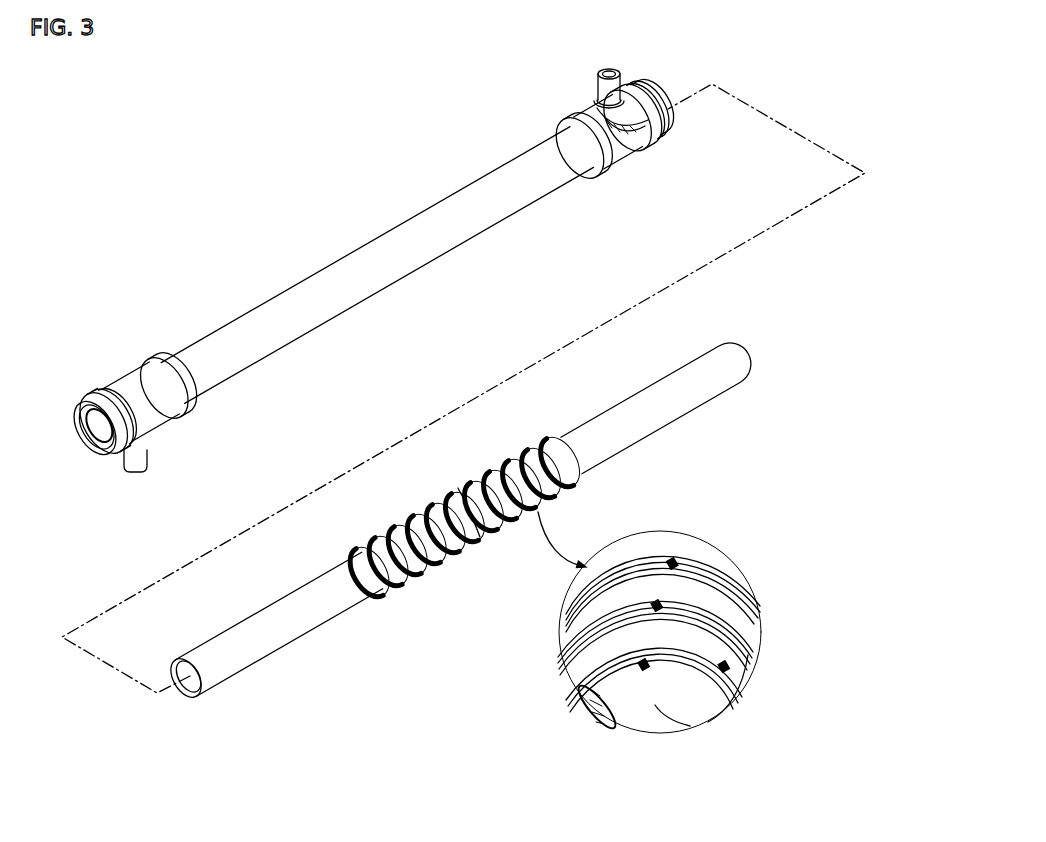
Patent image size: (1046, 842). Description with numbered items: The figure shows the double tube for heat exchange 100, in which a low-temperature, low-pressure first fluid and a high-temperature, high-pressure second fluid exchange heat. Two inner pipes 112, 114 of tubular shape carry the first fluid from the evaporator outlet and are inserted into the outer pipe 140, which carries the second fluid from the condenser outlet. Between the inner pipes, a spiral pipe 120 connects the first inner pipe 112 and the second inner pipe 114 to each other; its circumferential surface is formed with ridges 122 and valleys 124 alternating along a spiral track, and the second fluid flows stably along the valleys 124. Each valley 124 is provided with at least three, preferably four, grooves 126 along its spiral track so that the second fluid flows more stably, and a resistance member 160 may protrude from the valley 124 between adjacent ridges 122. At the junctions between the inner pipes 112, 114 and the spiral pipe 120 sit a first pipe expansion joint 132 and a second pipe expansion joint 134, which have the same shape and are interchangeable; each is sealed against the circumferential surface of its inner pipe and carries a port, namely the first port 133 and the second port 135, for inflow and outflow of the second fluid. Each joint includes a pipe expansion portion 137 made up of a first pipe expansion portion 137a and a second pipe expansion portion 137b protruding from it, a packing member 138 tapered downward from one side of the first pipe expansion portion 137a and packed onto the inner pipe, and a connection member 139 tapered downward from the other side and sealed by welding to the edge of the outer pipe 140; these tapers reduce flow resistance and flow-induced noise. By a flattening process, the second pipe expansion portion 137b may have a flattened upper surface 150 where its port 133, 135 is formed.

The double tube for heat exchange 100 is at (199, 170).
The first inner pipe 112 is at (297, 632).
The second inner pipe 114 is at (662, 428).
The spiral pipe 120 is at (528, 450).
The ridges 122 is at (405, 527).
The valleys 124 is at (663, 720).
The grooves 126 is at (663, 708).
The first pipe expansion joint 132 is at (381, 264).
The first port 133 is at (130, 467).
The second pipe expansion joint 134 is at (629, 122).
The second port 135 is at (608, 67).
The pipe expansion portion 137 is at (650, 222).
The first pipe expansion portion 137a is at (127, 373).
The second pipe expansion portion 137b is at (643, 130).
The packing member 138 is at (92, 397).
The connection member 139 is at (183, 403).
The outer pipe 140 is at (302, 279).
The flattened upper surface 150 is at (147, 442).
The resistance member 160 is at (647, 662).